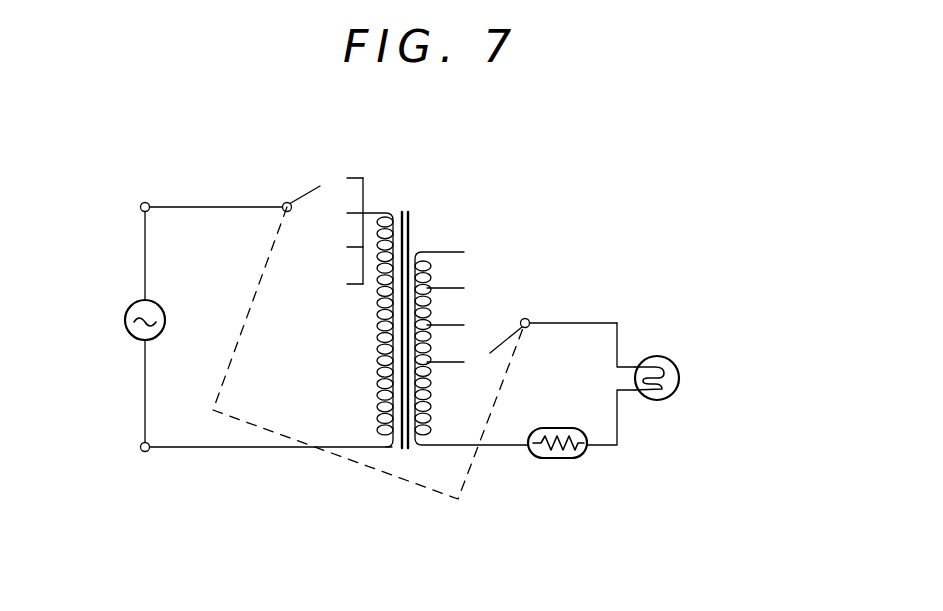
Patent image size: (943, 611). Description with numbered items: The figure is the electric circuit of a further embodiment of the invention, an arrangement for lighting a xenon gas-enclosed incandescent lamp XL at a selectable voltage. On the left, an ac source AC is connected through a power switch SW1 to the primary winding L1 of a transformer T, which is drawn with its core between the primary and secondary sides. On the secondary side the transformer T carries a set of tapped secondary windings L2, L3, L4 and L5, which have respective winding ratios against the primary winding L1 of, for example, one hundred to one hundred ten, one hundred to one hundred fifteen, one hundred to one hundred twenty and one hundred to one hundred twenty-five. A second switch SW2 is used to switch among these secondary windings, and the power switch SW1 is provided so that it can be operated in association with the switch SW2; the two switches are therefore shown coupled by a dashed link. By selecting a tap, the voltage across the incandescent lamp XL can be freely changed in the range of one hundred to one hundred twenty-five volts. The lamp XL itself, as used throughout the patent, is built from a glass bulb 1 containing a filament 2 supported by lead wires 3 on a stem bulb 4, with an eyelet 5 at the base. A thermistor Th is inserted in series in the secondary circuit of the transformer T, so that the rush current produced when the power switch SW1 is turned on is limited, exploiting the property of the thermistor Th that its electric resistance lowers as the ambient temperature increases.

The glass bulb 1 is at (404, 271).
The filament 2 is at (404, 269).
The lead wire 3 is at (404, 322).
The stem bulb 4 is at (404, 267).
The eyelet 5 is at (422, 311).
The ac source AC is at (130, 327).
The power switch SW1 is at (276, 190).
The switch SW2 is at (553, 320).
The transformer T is at (404, 311).
The primary winding L1 is at (366, 326).
The secondary winding L2 is at (437, 395).
The secondary winding L3 is at (437, 340).
The secondary winding L4 is at (437, 302).
The secondary winding L5 is at (437, 272).
The incandescent lamp XL is at (675, 378).
The thermistor Th is at (557, 460).